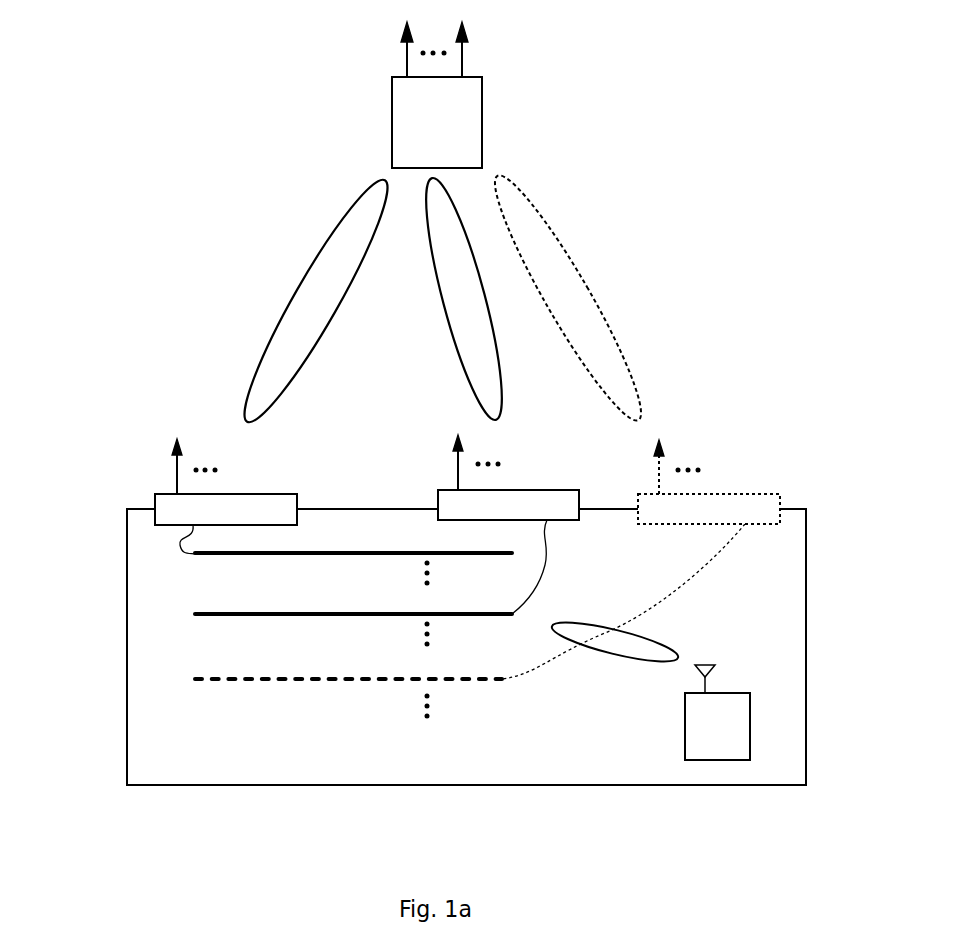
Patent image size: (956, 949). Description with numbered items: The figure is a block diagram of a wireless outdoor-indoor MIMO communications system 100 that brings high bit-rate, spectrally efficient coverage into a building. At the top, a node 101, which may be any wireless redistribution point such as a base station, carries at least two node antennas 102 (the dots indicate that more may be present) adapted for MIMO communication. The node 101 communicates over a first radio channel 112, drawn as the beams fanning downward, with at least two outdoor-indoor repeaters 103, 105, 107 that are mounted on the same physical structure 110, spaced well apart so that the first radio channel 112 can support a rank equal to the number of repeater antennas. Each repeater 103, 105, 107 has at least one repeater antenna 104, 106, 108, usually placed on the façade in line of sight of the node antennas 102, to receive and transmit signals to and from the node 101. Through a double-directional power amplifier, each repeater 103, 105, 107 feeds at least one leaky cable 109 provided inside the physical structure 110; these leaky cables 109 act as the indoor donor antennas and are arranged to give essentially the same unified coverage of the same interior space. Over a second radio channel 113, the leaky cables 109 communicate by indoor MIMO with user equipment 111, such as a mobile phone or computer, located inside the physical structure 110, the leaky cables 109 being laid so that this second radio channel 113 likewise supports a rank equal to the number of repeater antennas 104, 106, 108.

The wireless outdoor-indoor MIMO communications system 100 is at (231, 178).
The node 101 is at (392, 107).
The node antennas 102 is at (405, 67).
The outdoor-indoor repeater 103 is at (155, 494).
The repeater antenna 104 is at (177, 461).
The outdoor-indoor repeater 105 is at (527, 490).
The repeater antenna 106 is at (458, 463).
The outdoor-indoor repeater 107 is at (757, 494).
The repeater antenna 108 is at (659, 466).
The leaky cable 109 is at (367, 553).
The physical structure 110 is at (127, 632).
The user equipment 111 is at (738, 754).
The first radio channel 112 is at (298, 290).
The second radio channel 113 is at (642, 658).